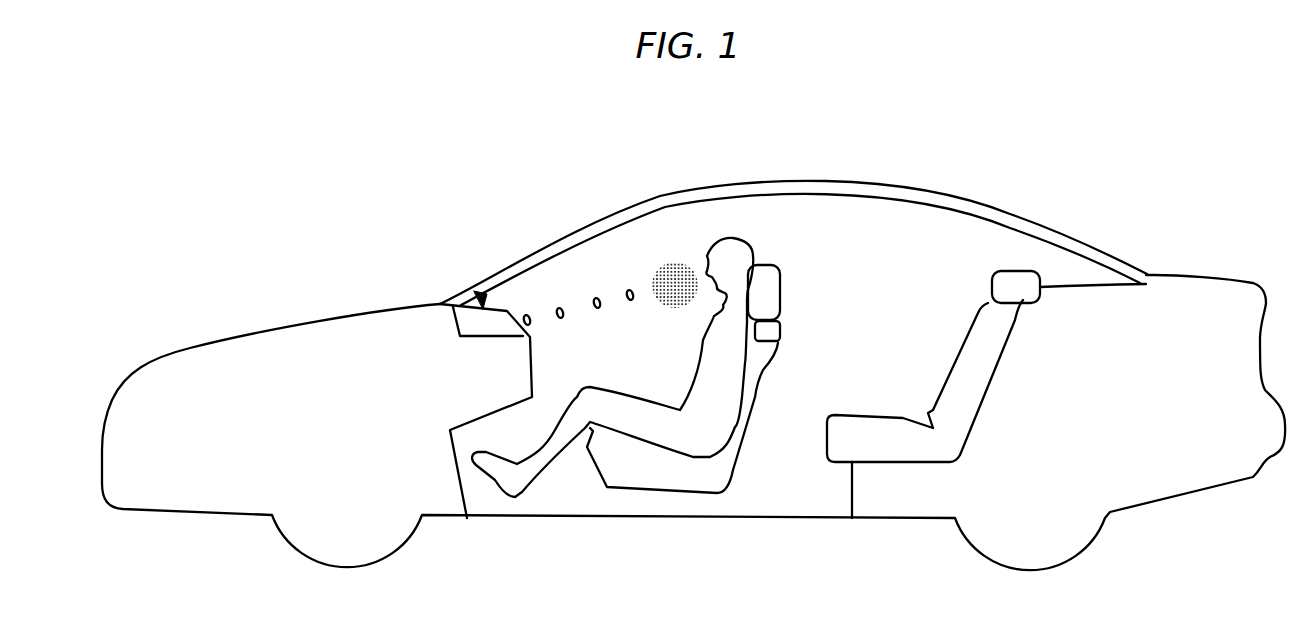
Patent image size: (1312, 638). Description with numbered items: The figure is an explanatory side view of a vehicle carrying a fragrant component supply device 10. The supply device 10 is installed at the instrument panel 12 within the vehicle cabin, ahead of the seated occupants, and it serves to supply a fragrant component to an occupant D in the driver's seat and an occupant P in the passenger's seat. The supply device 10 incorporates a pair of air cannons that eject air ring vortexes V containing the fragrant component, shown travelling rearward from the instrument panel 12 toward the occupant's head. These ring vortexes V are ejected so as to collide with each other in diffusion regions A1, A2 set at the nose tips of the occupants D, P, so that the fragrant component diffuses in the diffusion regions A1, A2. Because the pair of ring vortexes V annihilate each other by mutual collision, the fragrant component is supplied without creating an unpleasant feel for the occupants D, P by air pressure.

The fragrant component supply device 10 is at (480, 290).
The instrument panel 12 is at (498, 375).
The air ring vortexes V is at (561, 318).
The diffusion region A1 is at (677, 223).
The diffusion region A2 is at (675, 273).
The occupant in driver's seat D is at (658, 367).
The occupant in passenger's seat P is at (742, 342).